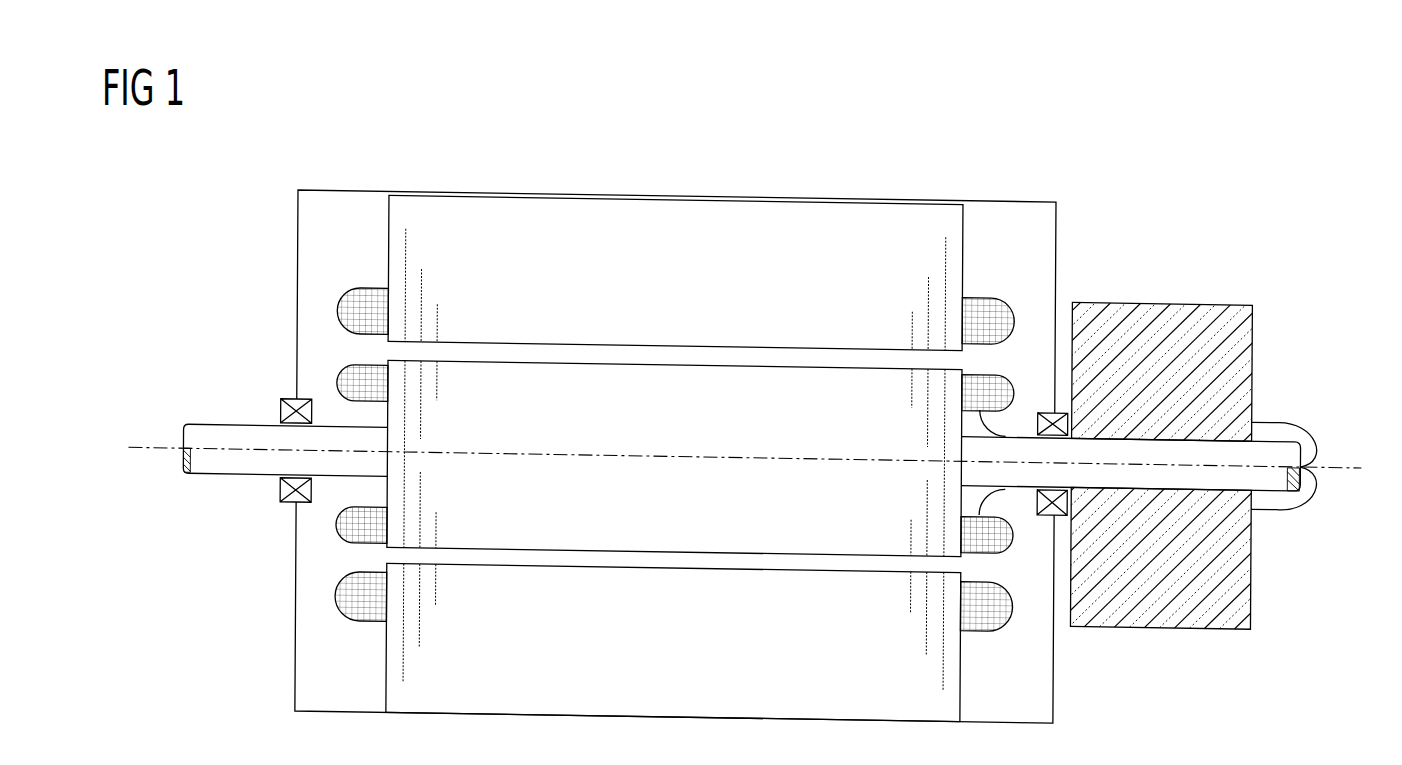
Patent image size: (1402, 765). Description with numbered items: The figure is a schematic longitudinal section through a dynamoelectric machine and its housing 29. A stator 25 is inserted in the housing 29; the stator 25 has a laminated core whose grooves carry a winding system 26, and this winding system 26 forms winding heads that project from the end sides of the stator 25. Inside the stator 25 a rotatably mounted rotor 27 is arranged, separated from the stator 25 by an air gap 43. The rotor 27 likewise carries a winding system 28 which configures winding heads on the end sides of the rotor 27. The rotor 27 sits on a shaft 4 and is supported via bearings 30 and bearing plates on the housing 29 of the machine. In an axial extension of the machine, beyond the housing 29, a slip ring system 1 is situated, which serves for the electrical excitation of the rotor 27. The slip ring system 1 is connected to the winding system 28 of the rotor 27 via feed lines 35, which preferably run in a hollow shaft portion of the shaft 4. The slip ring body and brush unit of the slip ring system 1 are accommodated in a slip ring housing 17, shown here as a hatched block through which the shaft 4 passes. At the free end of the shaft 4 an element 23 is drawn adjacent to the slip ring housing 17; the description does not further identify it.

The slip ring system 1 is at (1198, 246).
The shaft 4 is at (220, 472).
The slip ring housing 17 is at (1244, 325).
The shaft end element 23 is at (1349, 451).
The stator 25 is at (681, 212).
The winding system 26 is at (338, 310).
The rotor 27 is at (680, 384).
The winding system 28 is at (337, 526).
The housing 29 is at (350, 187).
The bearings 30 is at (291, 410).
The feed lines 35 is at (992, 484).
The air gap 43 is at (823, 352).